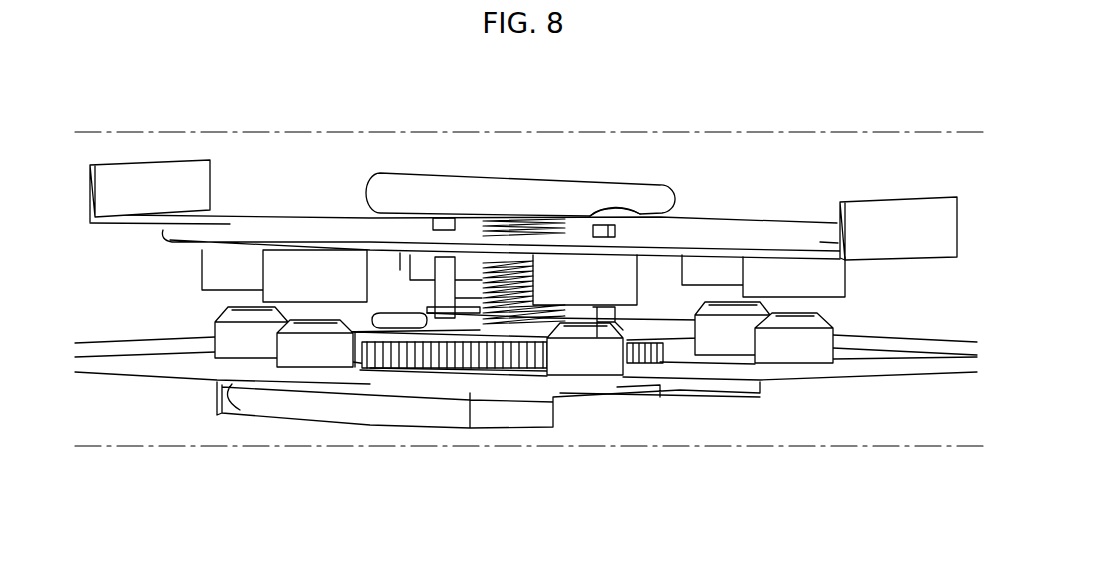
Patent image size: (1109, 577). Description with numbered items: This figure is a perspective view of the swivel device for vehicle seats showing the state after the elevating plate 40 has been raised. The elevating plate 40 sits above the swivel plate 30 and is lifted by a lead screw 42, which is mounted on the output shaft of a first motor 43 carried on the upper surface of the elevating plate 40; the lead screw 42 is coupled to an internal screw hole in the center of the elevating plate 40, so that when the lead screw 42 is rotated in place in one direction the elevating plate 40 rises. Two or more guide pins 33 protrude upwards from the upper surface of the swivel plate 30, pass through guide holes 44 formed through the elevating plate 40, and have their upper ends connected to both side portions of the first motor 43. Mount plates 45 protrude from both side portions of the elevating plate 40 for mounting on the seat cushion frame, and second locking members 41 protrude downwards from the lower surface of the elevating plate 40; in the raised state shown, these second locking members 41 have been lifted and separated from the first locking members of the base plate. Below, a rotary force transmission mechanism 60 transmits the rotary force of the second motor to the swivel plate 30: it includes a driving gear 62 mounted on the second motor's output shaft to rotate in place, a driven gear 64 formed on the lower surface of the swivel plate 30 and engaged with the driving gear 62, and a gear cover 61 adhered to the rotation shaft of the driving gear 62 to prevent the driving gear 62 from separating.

The swivel plate 30 is at (688, 364).
The guide pins 33 is at (600, 226).
The elevating plate 40 is at (746, 206).
The second locking members 41 is at (300, 266).
The lead screw 42 is at (513, 224).
The first motor 43 is at (432, 185).
The guide holes 44 is at (668, 214).
The mount plates 45 is at (148, 185).
The rotary force transmission mechanism 60 is at (488, 424).
The gear cover 61 is at (398, 322).
The driving gear 62 is at (411, 362).
The driven gear 64 is at (512, 362).